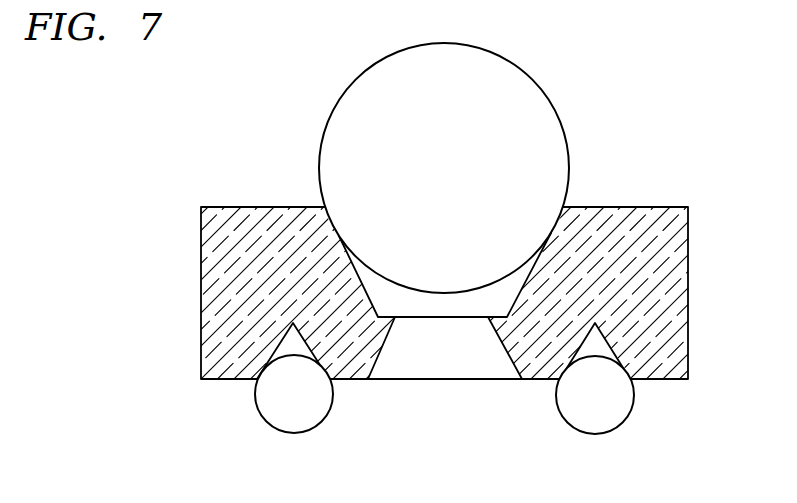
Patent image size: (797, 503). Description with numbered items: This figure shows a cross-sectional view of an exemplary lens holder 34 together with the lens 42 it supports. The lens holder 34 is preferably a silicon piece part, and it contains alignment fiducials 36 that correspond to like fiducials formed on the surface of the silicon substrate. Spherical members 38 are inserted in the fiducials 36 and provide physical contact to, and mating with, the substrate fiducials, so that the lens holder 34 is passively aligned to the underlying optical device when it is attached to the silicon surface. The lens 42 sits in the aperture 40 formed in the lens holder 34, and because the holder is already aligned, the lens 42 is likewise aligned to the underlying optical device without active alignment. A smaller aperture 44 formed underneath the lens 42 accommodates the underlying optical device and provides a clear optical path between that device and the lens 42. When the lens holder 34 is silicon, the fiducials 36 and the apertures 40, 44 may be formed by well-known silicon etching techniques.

The lens holder 34 is at (212, 287).
The alignment fiducials 36 is at (273, 353).
The spherical members 38 is at (290, 412).
The aperture 40 is at (415, 302).
The lens 42 is at (343, 131).
The smaller aperture 44 is at (477, 367).